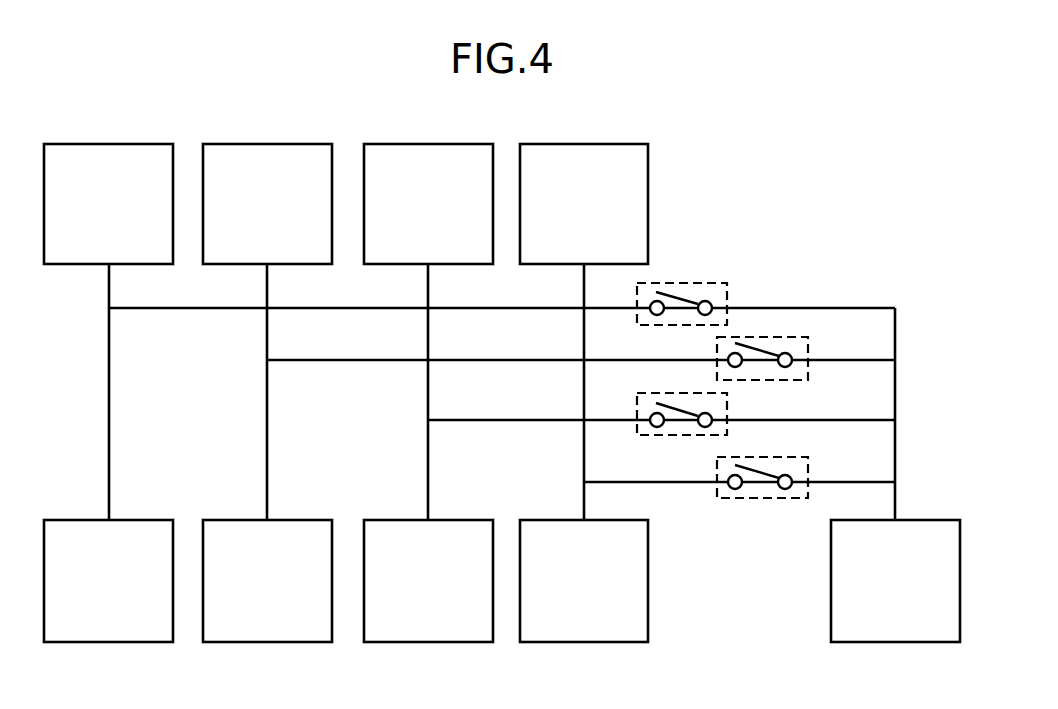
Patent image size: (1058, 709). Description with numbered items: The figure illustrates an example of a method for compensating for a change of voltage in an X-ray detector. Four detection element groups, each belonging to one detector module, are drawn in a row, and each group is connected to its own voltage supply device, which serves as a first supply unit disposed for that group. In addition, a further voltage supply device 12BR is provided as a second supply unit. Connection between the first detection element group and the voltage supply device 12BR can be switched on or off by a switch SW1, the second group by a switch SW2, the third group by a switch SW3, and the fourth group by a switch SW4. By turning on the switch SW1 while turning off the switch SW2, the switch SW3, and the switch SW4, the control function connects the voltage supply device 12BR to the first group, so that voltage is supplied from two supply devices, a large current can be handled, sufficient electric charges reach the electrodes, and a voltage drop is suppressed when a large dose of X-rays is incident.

The voltage supply device 12BR is at (895, 581).
The switch SW1 is at (727, 295).
The switch SW2 is at (808, 348).
The switch SW3 is at (727, 410).
The switch SW4 is at (808, 466).